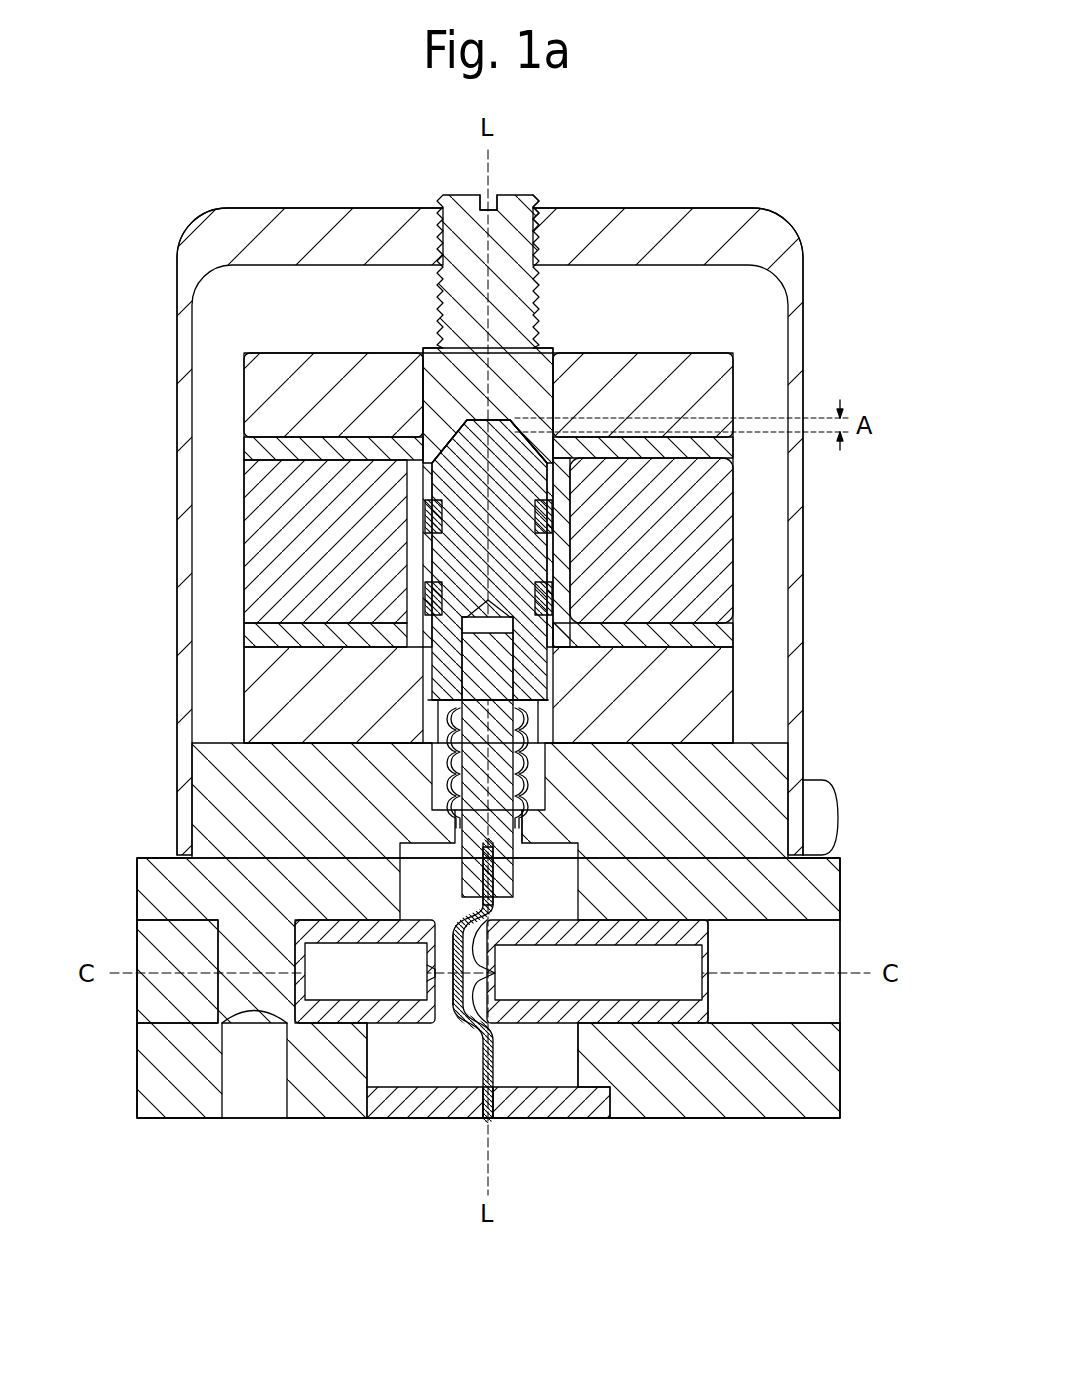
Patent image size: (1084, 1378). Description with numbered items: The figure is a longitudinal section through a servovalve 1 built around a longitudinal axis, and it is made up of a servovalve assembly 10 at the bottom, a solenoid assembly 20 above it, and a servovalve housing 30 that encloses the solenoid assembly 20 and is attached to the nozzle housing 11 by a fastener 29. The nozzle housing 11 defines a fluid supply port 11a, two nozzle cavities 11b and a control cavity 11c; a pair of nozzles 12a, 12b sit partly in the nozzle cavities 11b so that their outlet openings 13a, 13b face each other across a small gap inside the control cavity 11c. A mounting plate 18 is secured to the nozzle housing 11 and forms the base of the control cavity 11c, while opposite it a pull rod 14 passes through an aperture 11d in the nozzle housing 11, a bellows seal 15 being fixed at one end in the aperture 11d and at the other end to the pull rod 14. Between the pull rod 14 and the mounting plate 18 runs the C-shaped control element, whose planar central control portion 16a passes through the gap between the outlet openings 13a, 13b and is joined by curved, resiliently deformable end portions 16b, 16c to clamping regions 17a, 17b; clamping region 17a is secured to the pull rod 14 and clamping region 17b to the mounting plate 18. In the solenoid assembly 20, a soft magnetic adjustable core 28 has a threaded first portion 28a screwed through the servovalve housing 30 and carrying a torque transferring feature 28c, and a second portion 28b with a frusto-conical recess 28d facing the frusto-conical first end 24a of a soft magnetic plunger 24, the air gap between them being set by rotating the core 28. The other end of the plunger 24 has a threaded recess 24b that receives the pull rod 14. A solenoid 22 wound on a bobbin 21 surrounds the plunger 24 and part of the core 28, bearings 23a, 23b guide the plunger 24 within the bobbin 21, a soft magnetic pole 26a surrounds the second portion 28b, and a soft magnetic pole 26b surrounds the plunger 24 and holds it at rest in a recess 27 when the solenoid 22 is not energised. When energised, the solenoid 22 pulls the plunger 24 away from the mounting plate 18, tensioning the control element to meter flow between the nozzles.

The servovalve 1 is at (156, 174).
The servovalve assembly 10 is at (862, 1027).
The nozzle housing 11 is at (255, 830).
The fluid supply port 11a is at (245, 1100).
The nozzle cavities 11b is at (230, 945).
The control cavity 11c is at (563, 1075).
The aperture 11d is at (455, 838).
The nozzle 12a is at (322, 1015).
The nozzle 12b is at (605, 1012).
The outlet opening 13a is at (433, 975).
The outlet opening 13b is at (492, 976).
The pull rod 14 is at (560, 780).
The bellows seal 15 is at (462, 740).
The central control portion 16a is at (462, 1010).
The resiliently deformable end portion 16b is at (452, 985).
The resiliently deformable end portion 16c is at (455, 935).
The clamping region 17a is at (495, 873).
The clamping region 17b is at (490, 1120).
The mounting plate 18 is at (540, 1118).
The solenoid assembly 20 is at (845, 607).
The bobbin 21 is at (262, 446).
The solenoid 22 is at (710, 523).
The bearing 23a is at (432, 522).
The bearing 23b is at (548, 598).
The soft magnetic plunger 24 is at (462, 553).
The first end 24a is at (462, 455).
The threaded recess 24b is at (503, 627).
The soft magnetic pole 26a is at (275, 395).
The soft magnetic pole 26b is at (285, 690).
The recess 27 is at (550, 667).
The soft magnetic adjustable core 28 is at (470, 300).
The first portion 28a is at (515, 218).
The second portion 28b is at (515, 370).
The torque transferring feature 28c is at (484, 195).
The frusto-conical recess 28d is at (522, 422).
The fastener 29 is at (820, 818).
The servovalve housing 30 is at (210, 238).